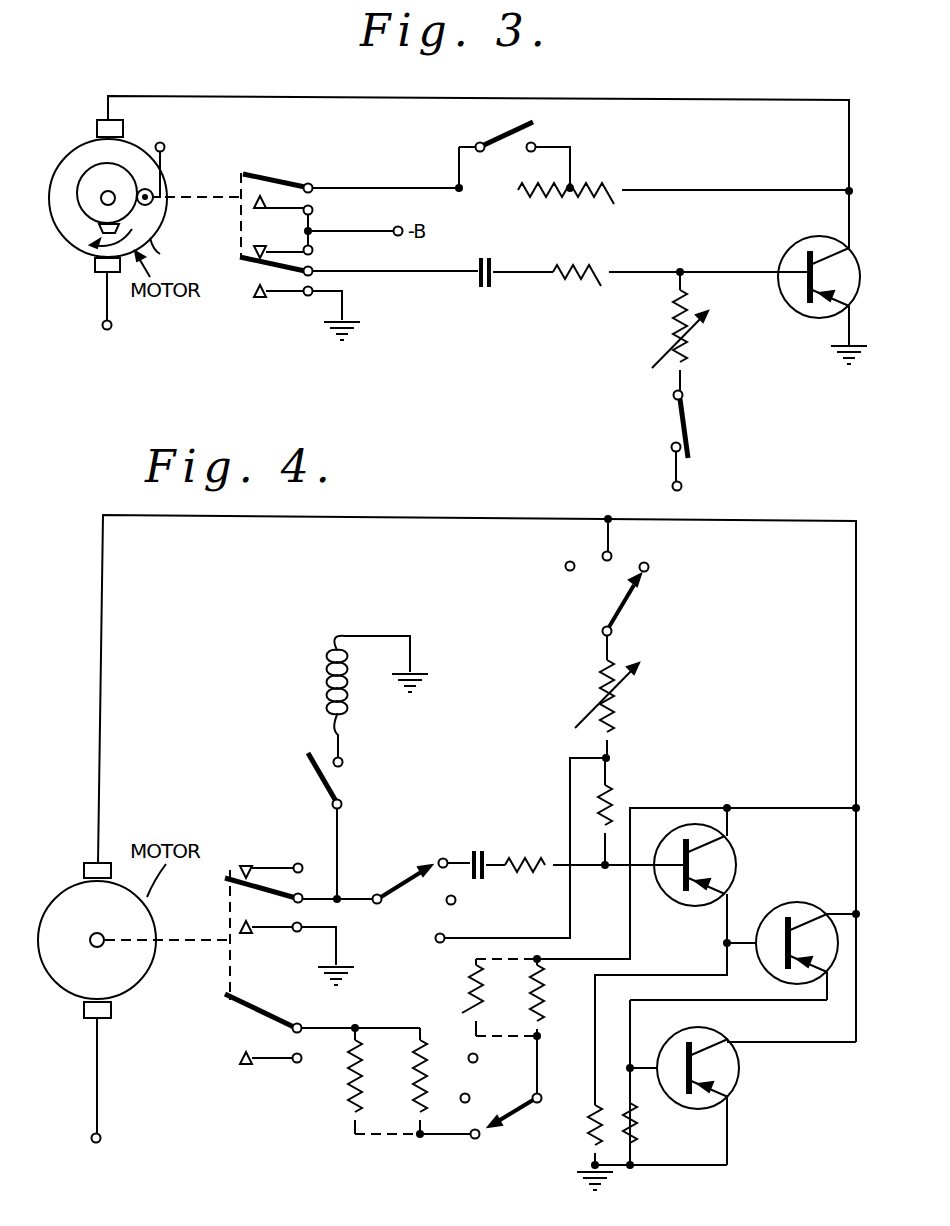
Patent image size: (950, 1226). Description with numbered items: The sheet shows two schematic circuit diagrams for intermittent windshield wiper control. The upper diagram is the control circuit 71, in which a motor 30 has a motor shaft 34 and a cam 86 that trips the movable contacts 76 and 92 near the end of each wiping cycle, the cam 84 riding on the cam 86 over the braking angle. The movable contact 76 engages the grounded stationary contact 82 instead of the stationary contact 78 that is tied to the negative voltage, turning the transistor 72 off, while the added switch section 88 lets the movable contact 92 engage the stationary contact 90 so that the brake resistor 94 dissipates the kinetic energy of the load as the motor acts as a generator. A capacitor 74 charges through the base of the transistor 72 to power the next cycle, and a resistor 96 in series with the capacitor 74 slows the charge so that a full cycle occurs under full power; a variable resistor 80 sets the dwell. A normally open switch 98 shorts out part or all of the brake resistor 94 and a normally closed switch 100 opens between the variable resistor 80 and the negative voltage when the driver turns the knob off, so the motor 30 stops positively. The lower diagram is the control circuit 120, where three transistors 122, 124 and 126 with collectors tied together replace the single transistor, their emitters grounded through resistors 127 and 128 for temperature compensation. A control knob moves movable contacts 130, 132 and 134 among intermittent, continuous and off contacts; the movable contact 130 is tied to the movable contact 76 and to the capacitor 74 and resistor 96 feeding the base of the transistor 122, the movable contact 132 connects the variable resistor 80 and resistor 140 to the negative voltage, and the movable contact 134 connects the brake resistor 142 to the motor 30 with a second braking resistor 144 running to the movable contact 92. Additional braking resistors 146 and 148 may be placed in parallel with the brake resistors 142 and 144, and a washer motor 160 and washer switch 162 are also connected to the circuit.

In FIG. 3, the motor 30 is at (92, 154).
In FIG. 4, the motor 30 is at (63, 897).
In FIG. 3, the motor shaft 34 is at (103, 205).
In FIG. 4, the motor shaft 34 is at (91, 947).
In FIG. 3, the cam 84 is at (162, 184).
In FIG. 3, the cam 86 is at (169, 254).
In FIG. 3, the switch section 88 is at (288, 182).
In FIG. 3, the movable contact 92 is at (304, 182).
In FIG. 4, the movable contact 92 is at (231, 1021).
In FIG. 3, the stationary contact 90 is at (304, 204).
In FIG. 4, the stationary contact 90 is at (262, 1064).
In FIG. 3, the stationary contact 78 is at (304, 242).
In FIG. 4, the stationary contact 78 is at (250, 860).
In FIG. 3, the movable contact 76 is at (250, 270).
In FIG. 4, the movable contact 76 is at (228, 880).
In FIG. 3, the stationary contact 82 is at (290, 298).
In FIG. 4, the stationary contact 82 is at (262, 934).
In FIG. 3, the normally open switch 98 is at (508, 138).
In FIG. 3, the brake resistor 94 is at (571, 198).
In FIG. 3, the capacitor 74 is at (484, 286).
In FIG. 4, the capacitor 74 is at (484, 850).
In FIG. 3, the resistor 96 is at (559, 272).
In FIG. 4, the resistor 96 is at (522, 858).
In FIG. 3, the variable resistor 80 is at (668, 326).
In FIG. 4, the variable resistor 80 is at (604, 680).
In FIG. 3, the normally closed switch 100 is at (690, 424).
In FIG. 3, the transistor 72 is at (809, 316).
In FIG. 3, the control circuit 71 is at (733, 100).
In FIG. 4, the control circuit 120 is at (500, 520).
In FIG. 4, the movable contact 132 is at (614, 610).
In FIG. 4, the resistor 140 is at (612, 806).
In FIG. 4, the washer motor 160 is at (326, 690).
In FIG. 4, the washer switch 162 is at (319, 786).
In FIG. 4, the movable contact 130 is at (397, 888).
In FIG. 4, the transistor 122 is at (732, 871).
In FIG. 4, the transistor 124 is at (808, 911).
In FIG. 4, the transistor 126 is at (738, 1076).
In FIG. 4, the resistor 128 is at (639, 1120).
In FIG. 4, the resistor 127 is at (592, 1106).
In FIG. 4, the additional braking resistor 146 is at (470, 980).
In FIG. 4, the brake resistor 142 is at (540, 1008).
In FIG. 4, the additional braking resistor 148 is at (348, 1090).
In FIG. 4, the second braking resistor 144 is at (410, 1092).
In FIG. 4, the movable contact 134 is at (520, 1118).